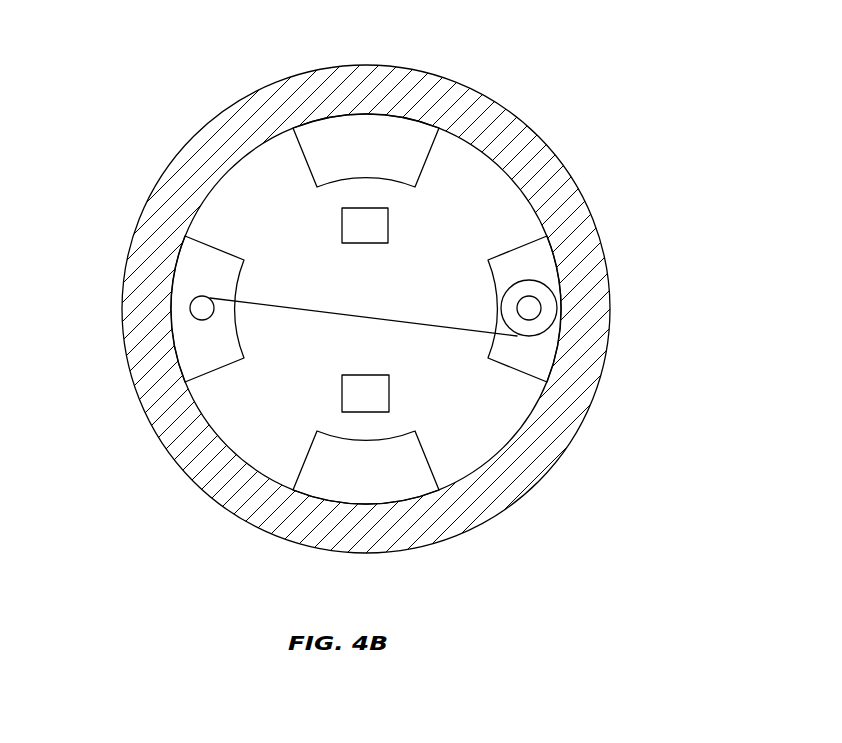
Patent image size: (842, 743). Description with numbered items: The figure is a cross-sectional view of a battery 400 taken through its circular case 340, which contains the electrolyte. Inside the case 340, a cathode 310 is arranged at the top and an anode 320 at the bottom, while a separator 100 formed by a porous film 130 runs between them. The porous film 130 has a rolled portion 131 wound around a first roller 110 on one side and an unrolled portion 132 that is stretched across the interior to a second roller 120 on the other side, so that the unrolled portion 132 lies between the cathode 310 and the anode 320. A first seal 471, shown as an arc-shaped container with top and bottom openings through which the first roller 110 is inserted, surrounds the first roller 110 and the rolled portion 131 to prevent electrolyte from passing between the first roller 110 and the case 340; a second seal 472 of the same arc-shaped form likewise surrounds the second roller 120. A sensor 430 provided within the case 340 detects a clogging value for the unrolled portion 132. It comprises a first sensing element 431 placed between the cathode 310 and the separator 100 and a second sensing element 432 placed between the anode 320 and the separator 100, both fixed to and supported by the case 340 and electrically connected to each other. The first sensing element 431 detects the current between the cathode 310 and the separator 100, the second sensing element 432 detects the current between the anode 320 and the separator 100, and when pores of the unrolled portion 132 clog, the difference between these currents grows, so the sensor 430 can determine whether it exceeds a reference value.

The battery 400 is at (223, 31).
The separator 100 is at (447, 355).
The first roller 110 is at (530, 307).
The second roller 120 is at (200, 308).
The porous film 130 is at (354, 310).
The rolled portion 131 is at (535, 292).
The unrolled portion 132 is at (318, 312).
The cathode 310 is at (365, 137).
The anode 320 is at (385, 485).
The case 340 is at (222, 127).
The sensor 430 is at (59, 383).
The first sensing element 431 is at (358, 232).
The second sensing element 432 is at (357, 392).
The first seal 471 is at (535, 357).
The second seal 472 is at (207, 270).